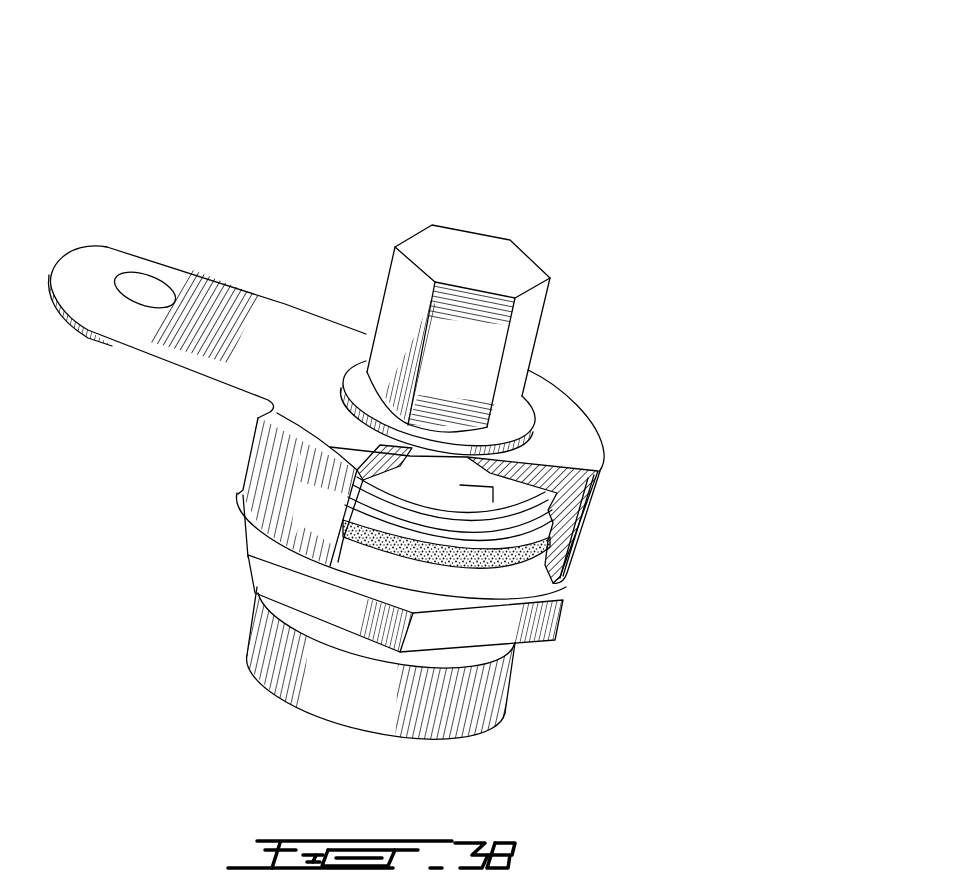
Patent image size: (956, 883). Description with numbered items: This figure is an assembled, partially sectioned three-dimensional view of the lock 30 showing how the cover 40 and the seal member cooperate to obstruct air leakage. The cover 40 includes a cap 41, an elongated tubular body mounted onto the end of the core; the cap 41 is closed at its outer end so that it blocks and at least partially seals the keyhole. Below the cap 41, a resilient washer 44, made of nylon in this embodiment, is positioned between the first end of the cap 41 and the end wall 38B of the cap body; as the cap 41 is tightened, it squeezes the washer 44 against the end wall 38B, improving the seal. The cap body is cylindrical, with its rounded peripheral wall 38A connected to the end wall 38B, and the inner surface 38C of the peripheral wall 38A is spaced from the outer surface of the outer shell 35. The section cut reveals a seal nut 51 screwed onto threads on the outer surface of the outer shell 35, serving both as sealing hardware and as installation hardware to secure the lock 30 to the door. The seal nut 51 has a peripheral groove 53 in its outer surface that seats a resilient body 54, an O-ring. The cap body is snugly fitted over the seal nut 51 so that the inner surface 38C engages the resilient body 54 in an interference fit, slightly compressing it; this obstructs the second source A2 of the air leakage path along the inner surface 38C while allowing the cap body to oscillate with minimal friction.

The lock 30 is at (231, 689).
The outer shell 35 is at (447, 707).
The peripheral wall 38A is at (273, 467).
The end wall 38B is at (587, 437).
The inner surface 38C is at (555, 512).
The cover 40 is at (532, 215).
The cap 41 is at (533, 307).
The resilient washer 44 is at (355, 383).
The seal nut 51 is at (527, 623).
The peripheral groove 53 is at (513, 527).
The resilient body 54 is at (495, 556).
The second source of the air leakage path A2 is at (510, 492).